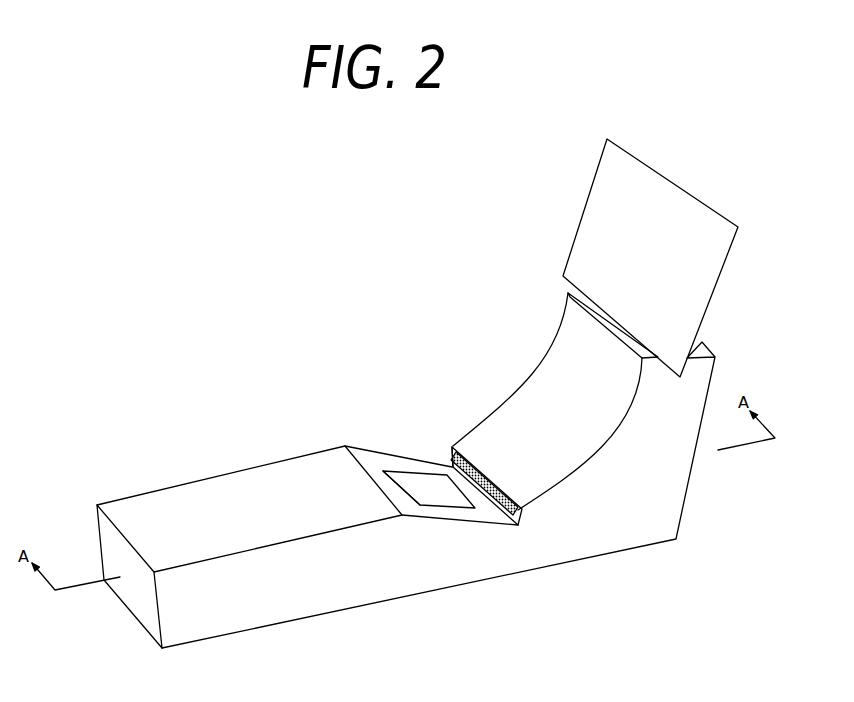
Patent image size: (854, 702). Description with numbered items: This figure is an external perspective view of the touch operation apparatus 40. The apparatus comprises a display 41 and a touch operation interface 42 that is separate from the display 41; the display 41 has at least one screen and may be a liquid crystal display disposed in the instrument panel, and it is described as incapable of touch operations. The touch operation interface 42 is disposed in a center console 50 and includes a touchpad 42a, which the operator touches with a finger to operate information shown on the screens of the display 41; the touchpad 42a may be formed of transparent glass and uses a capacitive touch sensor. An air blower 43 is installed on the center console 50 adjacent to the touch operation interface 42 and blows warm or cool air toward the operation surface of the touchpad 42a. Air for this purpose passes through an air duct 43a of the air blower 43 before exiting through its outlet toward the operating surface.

The touch operation apparatus 40 is at (302, 320).
The display 41 is at (620, 218).
The touch operation interface 42 is at (413, 470).
The touchpad 42a is at (403, 467).
The air blower 43 is at (490, 504).
The air duct 43a is at (450, 466).
The center console 50 is at (652, 485).